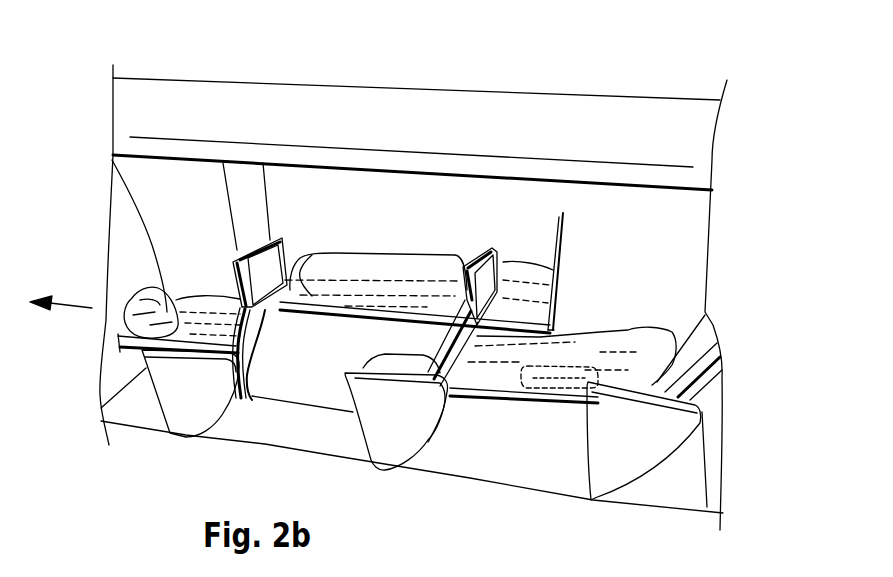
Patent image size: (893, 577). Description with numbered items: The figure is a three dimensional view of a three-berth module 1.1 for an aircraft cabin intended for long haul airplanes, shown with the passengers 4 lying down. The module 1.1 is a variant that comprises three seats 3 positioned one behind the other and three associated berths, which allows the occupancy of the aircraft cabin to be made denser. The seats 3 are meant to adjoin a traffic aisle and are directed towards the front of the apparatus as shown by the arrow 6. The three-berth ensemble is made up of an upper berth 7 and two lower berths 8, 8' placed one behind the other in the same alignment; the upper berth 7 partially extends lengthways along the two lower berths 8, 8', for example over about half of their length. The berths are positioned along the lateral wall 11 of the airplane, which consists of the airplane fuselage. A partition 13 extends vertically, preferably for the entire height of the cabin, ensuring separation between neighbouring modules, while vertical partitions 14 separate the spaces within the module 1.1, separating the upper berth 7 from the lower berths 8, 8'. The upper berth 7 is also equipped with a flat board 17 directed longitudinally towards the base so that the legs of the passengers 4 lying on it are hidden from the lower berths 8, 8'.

The module 1.1 is at (446, 80).
The seat 3 is at (197, 398).
The passenger 4 is at (132, 323).
The arrow 6 is at (80, 304).
The upper berth 7 is at (515, 312).
The lower berth 8 is at (117, 319).
The lower berth 8' is at (547, 410).
The lateral wall 11 is at (448, 210).
The partition 13 is at (115, 203).
The vertical partition 14 is at (254, 204).
The flat board 17 is at (317, 358).